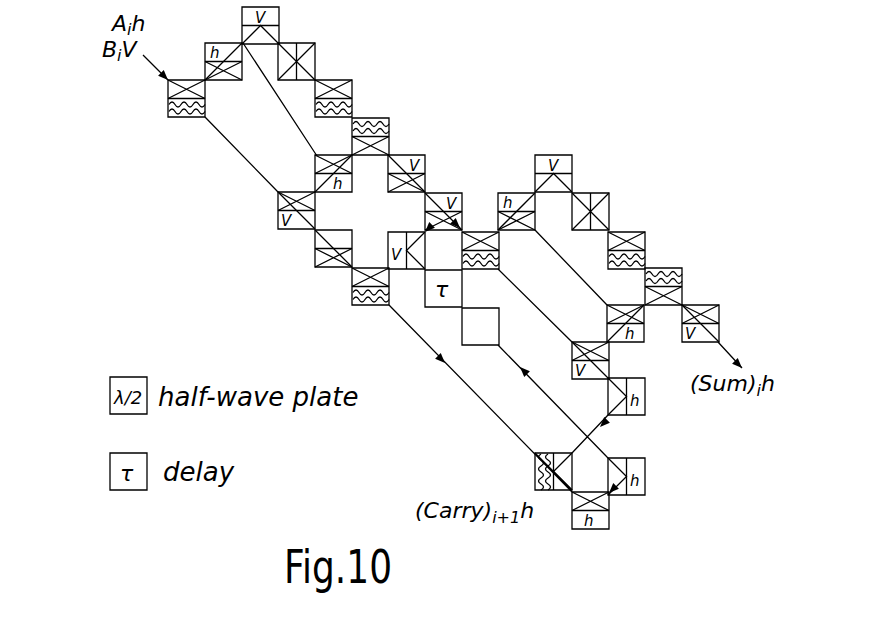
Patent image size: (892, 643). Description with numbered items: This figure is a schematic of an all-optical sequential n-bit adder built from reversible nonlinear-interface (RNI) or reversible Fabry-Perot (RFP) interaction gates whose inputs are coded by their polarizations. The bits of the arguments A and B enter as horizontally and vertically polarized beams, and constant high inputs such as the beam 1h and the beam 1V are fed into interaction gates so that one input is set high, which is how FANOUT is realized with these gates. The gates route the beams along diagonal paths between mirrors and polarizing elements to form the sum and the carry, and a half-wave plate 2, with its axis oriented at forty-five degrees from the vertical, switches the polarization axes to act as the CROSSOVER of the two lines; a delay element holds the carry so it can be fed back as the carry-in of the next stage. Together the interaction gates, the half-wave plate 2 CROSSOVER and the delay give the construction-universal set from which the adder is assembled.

The horizontally polarized unit input beam 1h is at (608, 193).
The vertically polarized unit input beam 1V is at (315, 268).
The half-wave plate (lambda/2) 2 is at (480, 326).